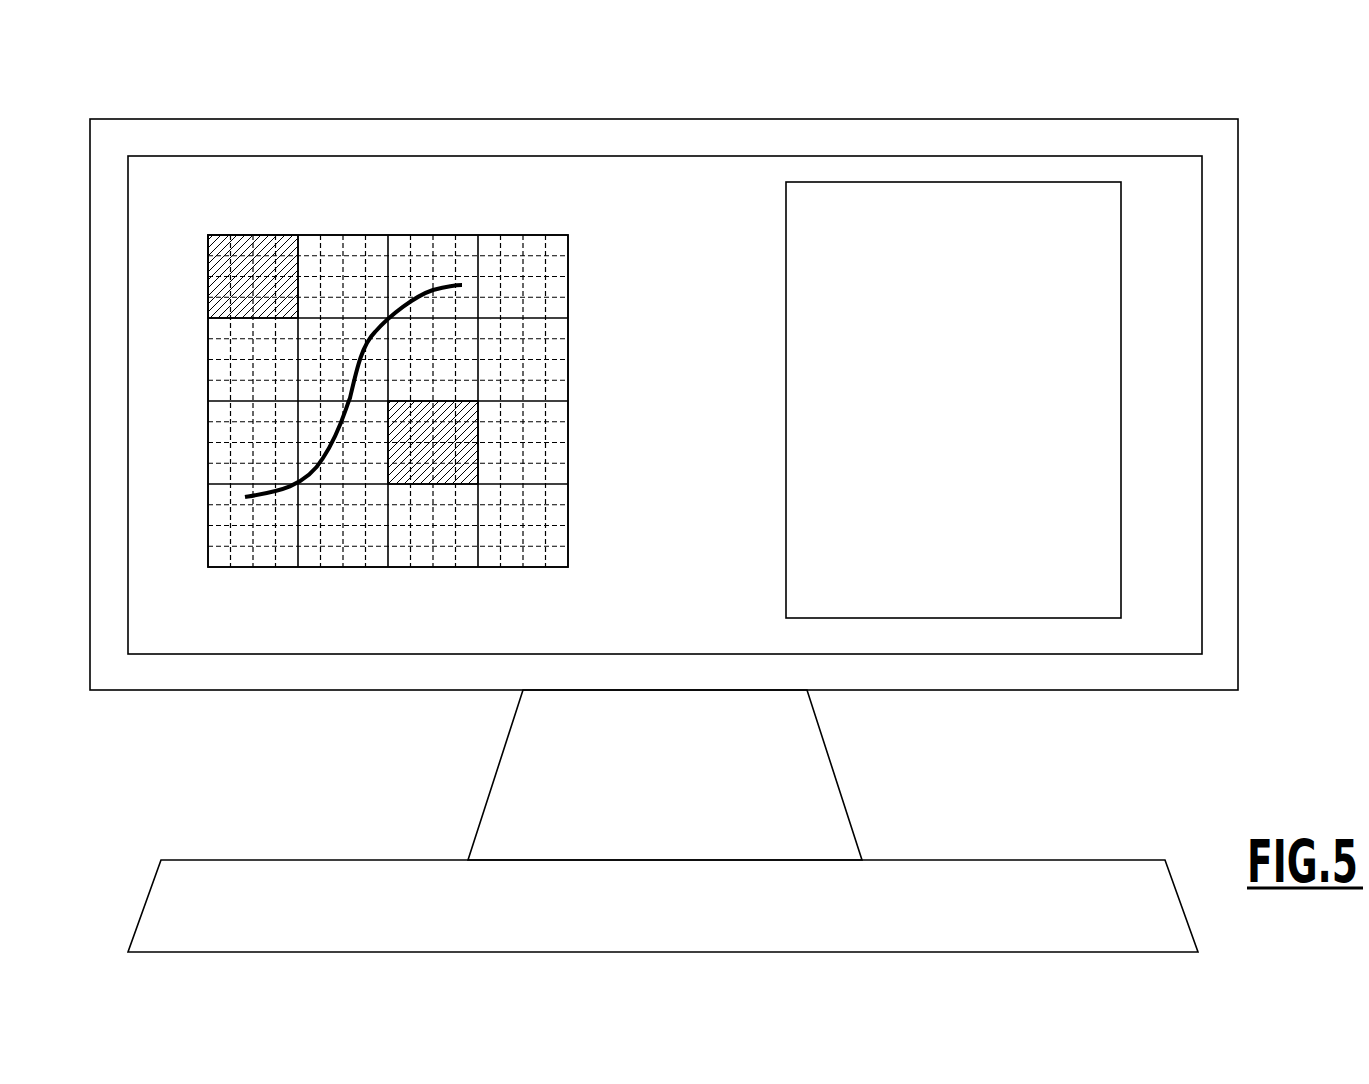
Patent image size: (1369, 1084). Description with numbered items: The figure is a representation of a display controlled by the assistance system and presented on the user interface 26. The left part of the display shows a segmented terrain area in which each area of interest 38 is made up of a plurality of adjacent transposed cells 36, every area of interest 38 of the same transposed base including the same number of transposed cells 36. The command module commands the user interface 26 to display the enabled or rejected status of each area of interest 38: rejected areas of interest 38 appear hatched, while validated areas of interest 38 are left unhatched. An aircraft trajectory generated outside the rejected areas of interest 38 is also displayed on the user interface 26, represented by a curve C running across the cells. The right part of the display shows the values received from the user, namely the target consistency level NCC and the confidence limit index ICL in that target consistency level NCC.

The user interface 26 is at (722, 535).
The transposed cells 36 is at (558, 288).
The area of interest 38 is at (439, 401).
The curve C is at (325, 455).
The target consistency level NCC is at (953, 233).
The confidence limit index ICL is at (962, 270).